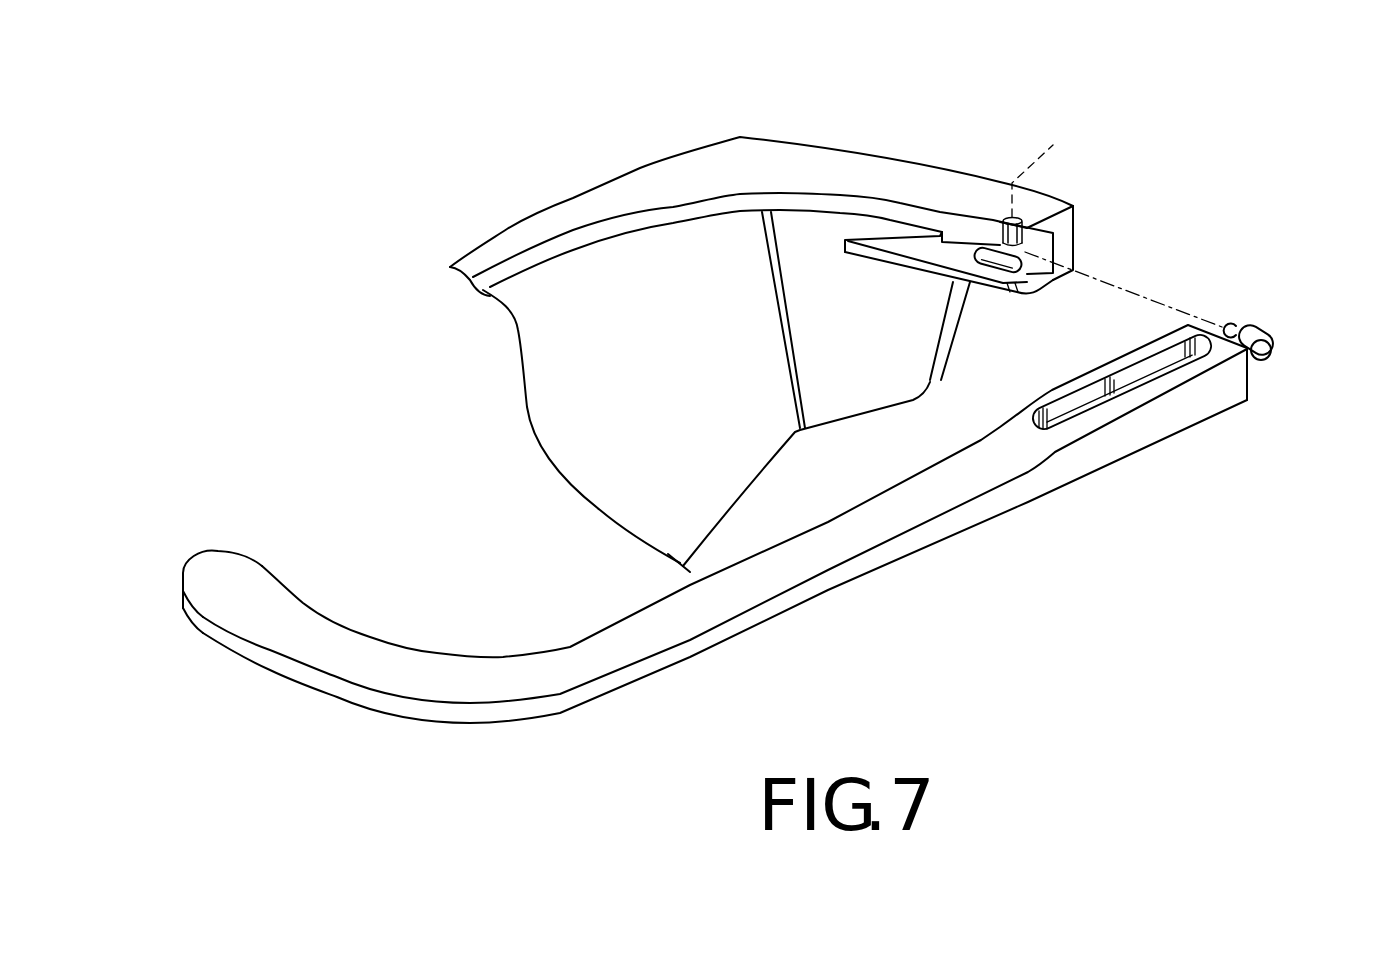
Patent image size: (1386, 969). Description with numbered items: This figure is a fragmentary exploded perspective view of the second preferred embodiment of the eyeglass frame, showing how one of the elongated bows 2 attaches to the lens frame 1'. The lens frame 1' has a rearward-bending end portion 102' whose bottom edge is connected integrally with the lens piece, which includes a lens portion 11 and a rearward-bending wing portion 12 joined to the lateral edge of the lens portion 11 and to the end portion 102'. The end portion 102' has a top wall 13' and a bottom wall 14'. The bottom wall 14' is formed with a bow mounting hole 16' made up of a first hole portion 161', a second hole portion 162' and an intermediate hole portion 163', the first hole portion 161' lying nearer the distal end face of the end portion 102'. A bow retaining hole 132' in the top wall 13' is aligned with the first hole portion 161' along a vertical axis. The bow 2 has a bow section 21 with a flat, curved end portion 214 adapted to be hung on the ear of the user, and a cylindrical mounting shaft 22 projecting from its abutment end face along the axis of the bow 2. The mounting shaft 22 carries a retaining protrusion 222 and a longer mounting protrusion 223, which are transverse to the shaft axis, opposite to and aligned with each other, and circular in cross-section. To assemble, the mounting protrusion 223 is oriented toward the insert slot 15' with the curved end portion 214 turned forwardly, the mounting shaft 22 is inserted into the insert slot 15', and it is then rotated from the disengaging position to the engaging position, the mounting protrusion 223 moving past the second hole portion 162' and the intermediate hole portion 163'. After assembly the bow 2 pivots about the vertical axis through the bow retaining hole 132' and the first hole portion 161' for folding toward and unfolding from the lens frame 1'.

The lens frame 1' is at (761, 226).
The end portion 102' is at (750, 156).
The top wall 13' is at (732, 181).
The lens portion 11 is at (707, 433).
The wing portion 12 is at (850, 387).
The bottom wall 14' is at (949, 310).
The insert slot 15' is at (1111, 266).
The bow mounting hole 16' is at (1111, 179).
The first hole portion 161' is at (1034, 299).
The second hole portion 162' is at (1016, 152).
The intermediate hole portion 163' is at (1065, 149).
The bow retaining hole 132' is at (1063, 168).
The bow 2 is at (975, 527).
The bow section 21 is at (833, 587).
The curved end portion 214 is at (317, 643).
The mounting shaft 22 is at (1267, 330).
The retaining protrusion 222 is at (1268, 358).
The mounting protrusion 223 is at (1227, 330).